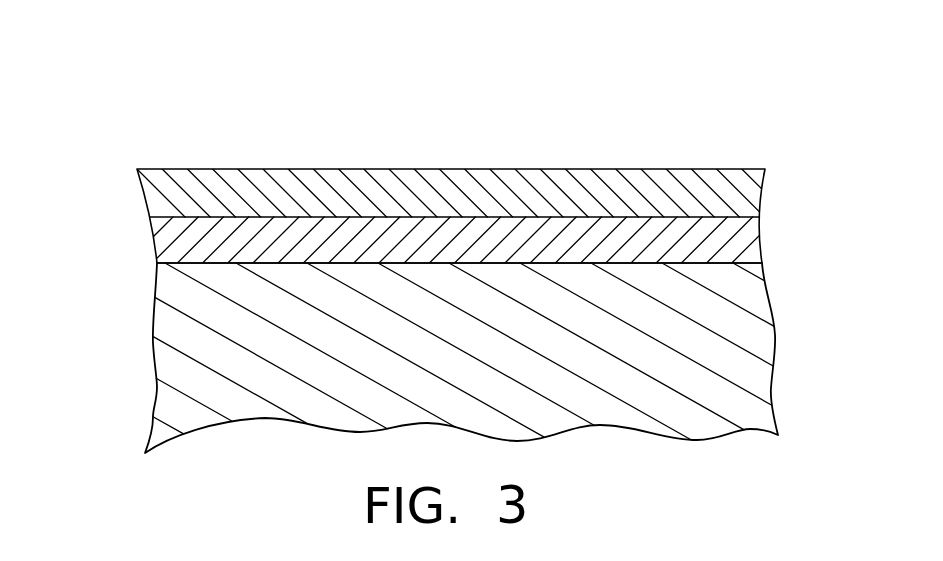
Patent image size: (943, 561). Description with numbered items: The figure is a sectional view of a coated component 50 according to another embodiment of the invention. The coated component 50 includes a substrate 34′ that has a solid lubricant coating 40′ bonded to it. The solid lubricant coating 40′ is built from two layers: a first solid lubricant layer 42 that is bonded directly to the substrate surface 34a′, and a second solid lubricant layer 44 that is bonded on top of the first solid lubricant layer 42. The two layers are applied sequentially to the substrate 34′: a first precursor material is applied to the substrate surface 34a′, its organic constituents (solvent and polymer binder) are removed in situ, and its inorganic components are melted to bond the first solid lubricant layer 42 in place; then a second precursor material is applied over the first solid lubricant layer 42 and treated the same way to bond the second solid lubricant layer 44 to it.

The coated component 50 is at (243, 97).
The solid lubricant coating 40′ is at (125, 169).
The second solid lubricant layer 44 is at (752, 197).
The first solid lubricant layer 42 is at (745, 238).
The substrate 34′ is at (182, 335).
The substrate surface 34a′ is at (720, 268).